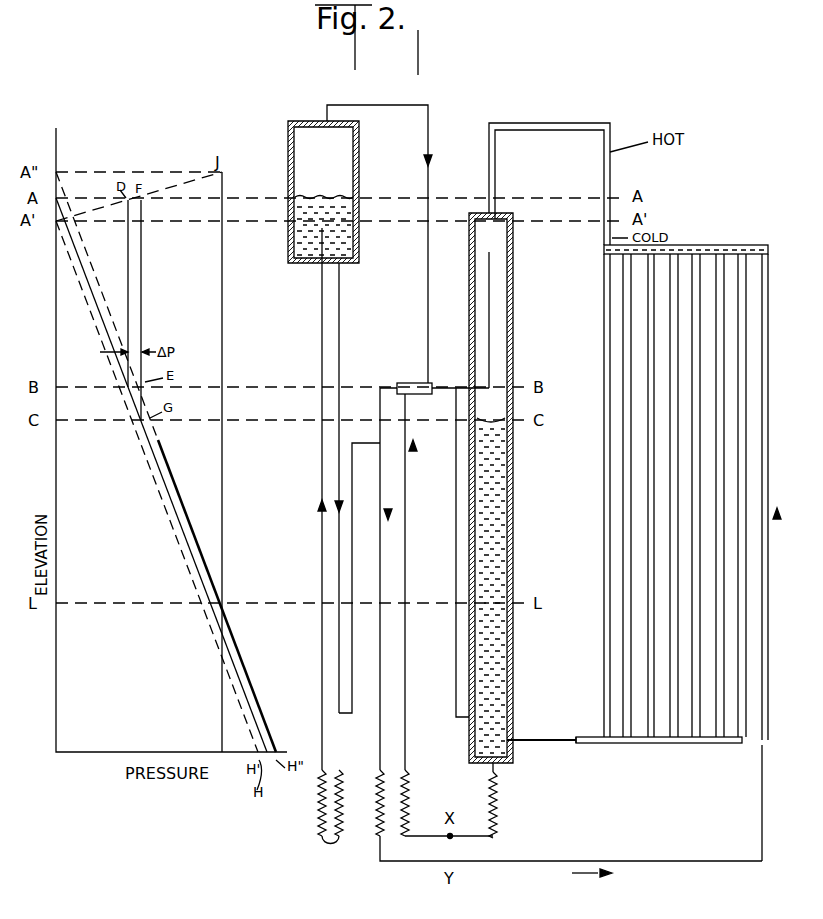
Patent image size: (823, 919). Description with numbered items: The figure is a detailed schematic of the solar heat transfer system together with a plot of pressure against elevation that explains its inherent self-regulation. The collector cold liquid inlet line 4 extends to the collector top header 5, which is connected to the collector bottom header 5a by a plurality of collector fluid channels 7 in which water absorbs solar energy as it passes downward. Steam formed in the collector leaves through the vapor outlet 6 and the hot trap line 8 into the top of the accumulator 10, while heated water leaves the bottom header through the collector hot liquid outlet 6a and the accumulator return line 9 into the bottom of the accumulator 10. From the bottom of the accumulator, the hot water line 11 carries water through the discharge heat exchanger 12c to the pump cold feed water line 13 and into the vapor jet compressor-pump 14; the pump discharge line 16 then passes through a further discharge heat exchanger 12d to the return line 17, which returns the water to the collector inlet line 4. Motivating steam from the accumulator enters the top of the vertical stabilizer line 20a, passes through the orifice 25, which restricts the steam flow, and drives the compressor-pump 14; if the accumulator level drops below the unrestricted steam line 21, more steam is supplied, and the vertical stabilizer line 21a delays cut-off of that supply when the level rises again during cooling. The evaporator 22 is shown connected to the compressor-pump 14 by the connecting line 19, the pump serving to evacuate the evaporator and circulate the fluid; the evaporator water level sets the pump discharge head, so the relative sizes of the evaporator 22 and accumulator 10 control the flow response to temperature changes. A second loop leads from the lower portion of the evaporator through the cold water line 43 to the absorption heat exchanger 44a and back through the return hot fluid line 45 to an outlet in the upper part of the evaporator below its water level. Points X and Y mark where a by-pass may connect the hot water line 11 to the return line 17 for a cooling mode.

The collector inlet line 4 is at (772, 458).
The collector top header 5 is at (718, 245).
The collector bottom header 5a is at (658, 744).
The vapor outlet 6 is at (605, 253).
The collector hot liquid outlet 6a is at (578, 746).
The collector fluid channels 7 is at (690, 468).
The hot trap line 8 is at (561, 123).
The accumulator return line 9 is at (533, 738).
The accumulator 10 is at (513, 275).
The hot water line 11 is at (497, 780).
The discharge heat exchanger 12c is at (409, 790).
The discharge heat exchanger 12d is at (380, 770).
The pump cold feed water line 13 is at (408, 612).
The compressor-pump 14 is at (413, 383).
The pump discharge line 16 is at (380, 717).
The return line 17 is at (655, 862).
The pipe 19 is at (330, 105).
The stabilizer line 20a is at (495, 331).
The steam line 21 is at (455, 725).
The stabilizer line 21a is at (497, 660).
The evaporator 22 is at (359, 252).
The orifice 25 is at (441, 384).
The cold water line 43 is at (340, 310).
The absorption heat exchanger 44a is at (347, 832).
The return hot fluid line 45 is at (318, 582).